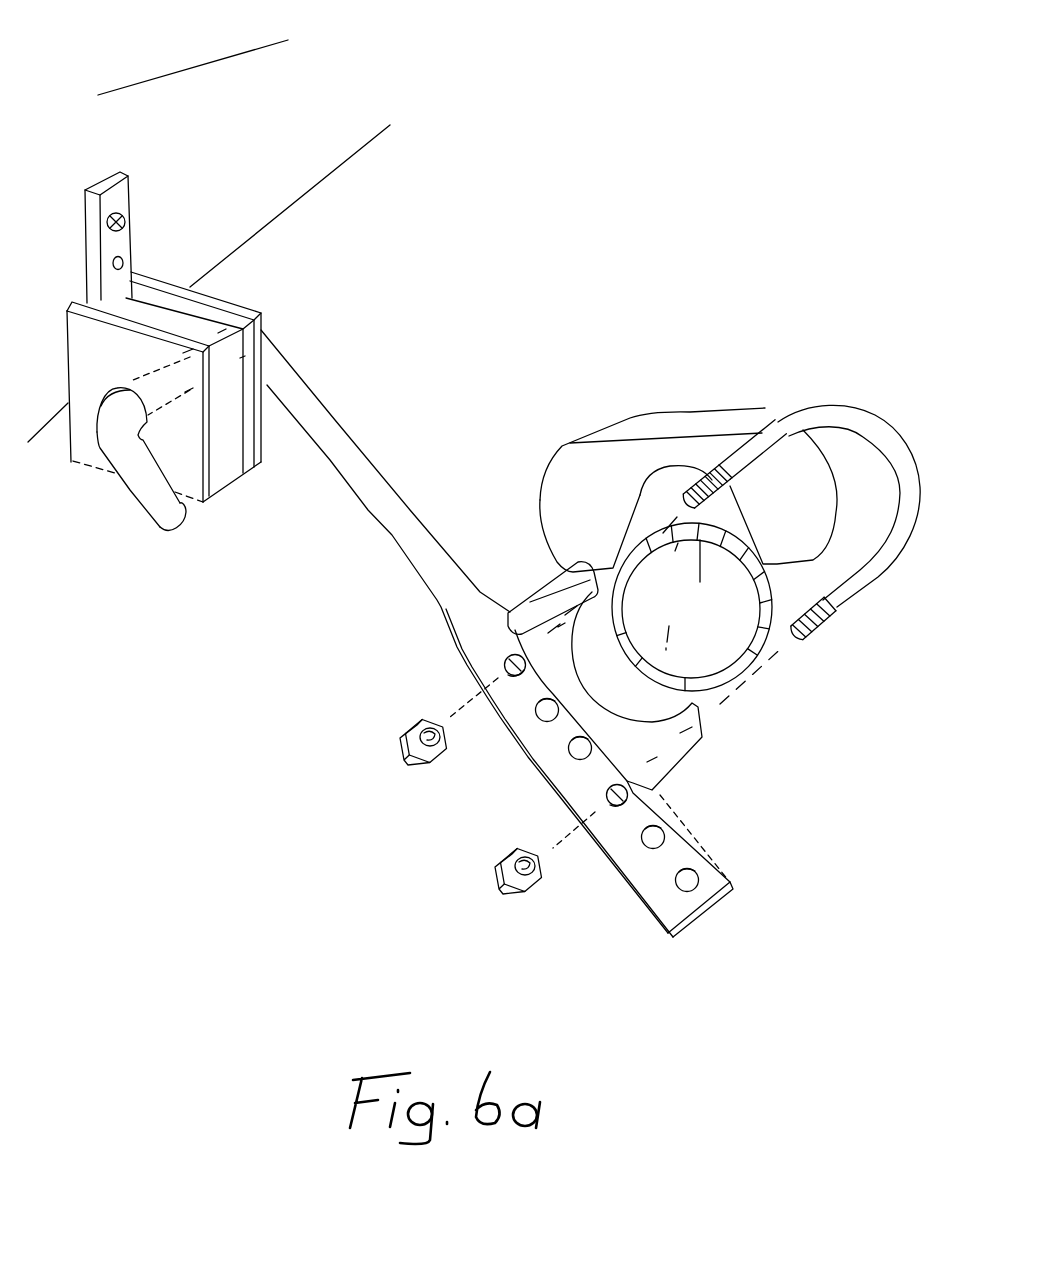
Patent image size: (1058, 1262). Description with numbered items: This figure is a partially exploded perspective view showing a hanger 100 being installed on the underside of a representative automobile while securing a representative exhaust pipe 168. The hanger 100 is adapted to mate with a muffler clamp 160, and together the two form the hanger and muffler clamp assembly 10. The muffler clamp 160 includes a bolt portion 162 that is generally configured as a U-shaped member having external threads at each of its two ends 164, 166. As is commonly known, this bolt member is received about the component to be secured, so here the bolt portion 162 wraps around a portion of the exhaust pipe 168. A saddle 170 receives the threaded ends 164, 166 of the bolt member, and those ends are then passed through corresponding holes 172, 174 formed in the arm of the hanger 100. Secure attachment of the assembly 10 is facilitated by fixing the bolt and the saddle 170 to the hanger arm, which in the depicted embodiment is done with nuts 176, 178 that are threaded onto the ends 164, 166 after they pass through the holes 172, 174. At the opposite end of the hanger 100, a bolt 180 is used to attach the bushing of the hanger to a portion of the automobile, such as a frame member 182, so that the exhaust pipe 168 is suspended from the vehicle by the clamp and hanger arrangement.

The hanger and muffler clamp assembly 10 is at (653, 108).
The hanger 100 is at (422, 295).
The muffler clamp 160 is at (793, 377).
The bolt portion 162 is at (783, 423).
The end 164 is at (672, 494).
The end 166 is at (791, 648).
The exhaust pipe 168 is at (650, 512).
The saddle 170 is at (546, 582).
The hole 172 is at (505, 663).
The hole 174 is at (615, 807).
The nut 176 is at (407, 755).
The nut 178 is at (510, 887).
The bolt 180 is at (124, 222).
The frame member 182 is at (280, 136).